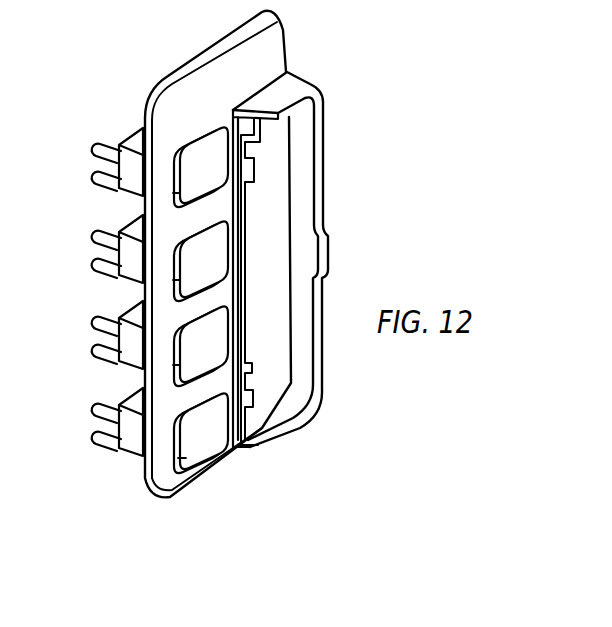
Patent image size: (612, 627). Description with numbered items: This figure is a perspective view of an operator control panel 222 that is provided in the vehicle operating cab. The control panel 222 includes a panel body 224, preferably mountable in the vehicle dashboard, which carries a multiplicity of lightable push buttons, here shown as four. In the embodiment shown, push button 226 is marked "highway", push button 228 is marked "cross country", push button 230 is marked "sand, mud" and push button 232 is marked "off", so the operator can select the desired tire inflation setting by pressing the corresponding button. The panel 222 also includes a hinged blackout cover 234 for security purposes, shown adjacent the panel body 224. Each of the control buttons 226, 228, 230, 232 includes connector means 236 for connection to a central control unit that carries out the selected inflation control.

The control panel 222 is at (456, 31).
The panel body 224 is at (268, 43).
The push button 226 is at (173, 202).
The push button 228 is at (173, 292).
The push button 230 is at (173, 378).
The push button 232 is at (150, 487).
The hinged blackout cover 234 is at (303, 170).
The connector means 236 is at (105, 145).